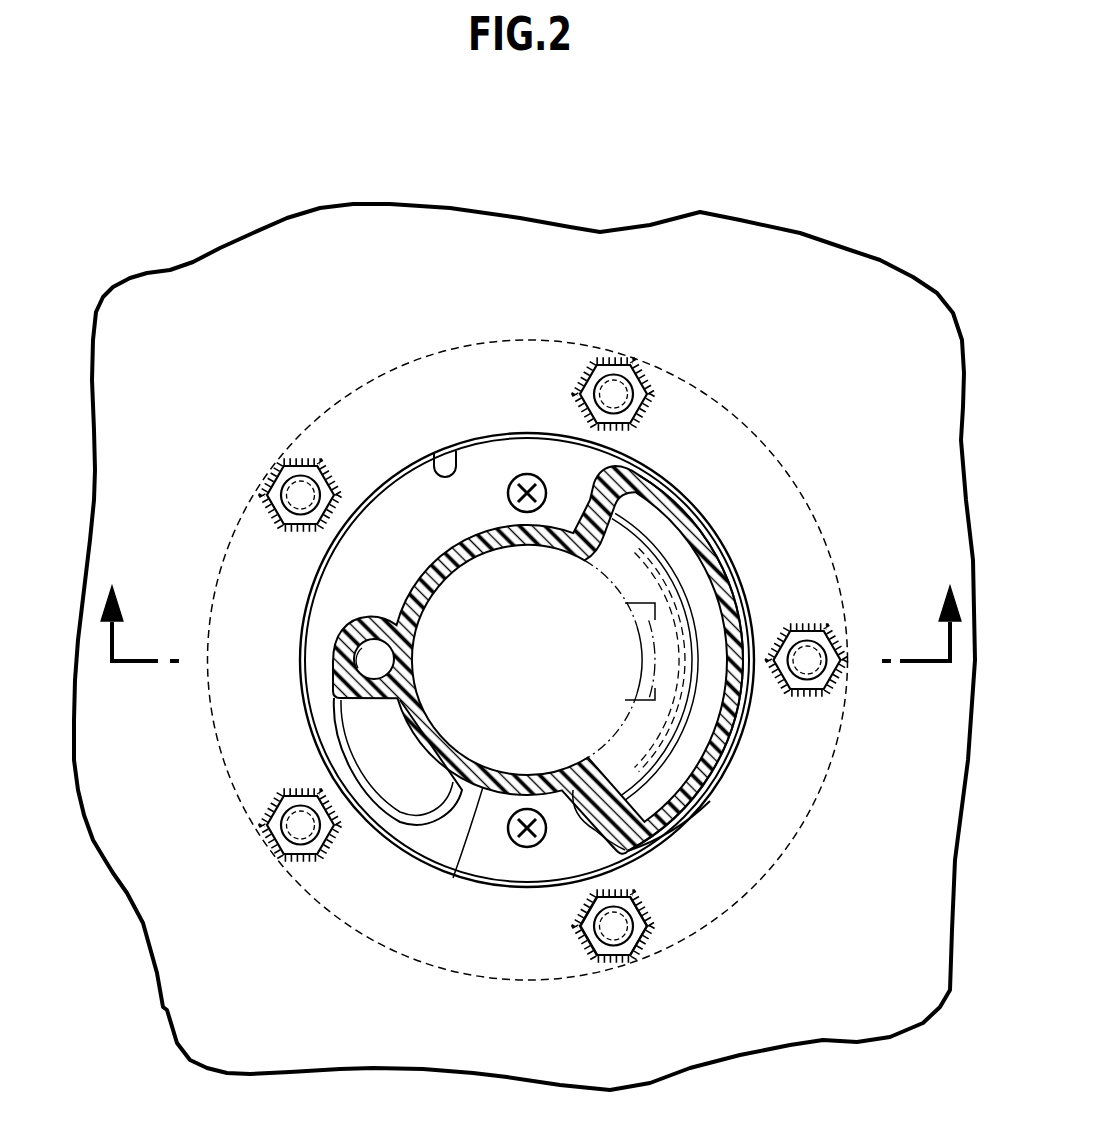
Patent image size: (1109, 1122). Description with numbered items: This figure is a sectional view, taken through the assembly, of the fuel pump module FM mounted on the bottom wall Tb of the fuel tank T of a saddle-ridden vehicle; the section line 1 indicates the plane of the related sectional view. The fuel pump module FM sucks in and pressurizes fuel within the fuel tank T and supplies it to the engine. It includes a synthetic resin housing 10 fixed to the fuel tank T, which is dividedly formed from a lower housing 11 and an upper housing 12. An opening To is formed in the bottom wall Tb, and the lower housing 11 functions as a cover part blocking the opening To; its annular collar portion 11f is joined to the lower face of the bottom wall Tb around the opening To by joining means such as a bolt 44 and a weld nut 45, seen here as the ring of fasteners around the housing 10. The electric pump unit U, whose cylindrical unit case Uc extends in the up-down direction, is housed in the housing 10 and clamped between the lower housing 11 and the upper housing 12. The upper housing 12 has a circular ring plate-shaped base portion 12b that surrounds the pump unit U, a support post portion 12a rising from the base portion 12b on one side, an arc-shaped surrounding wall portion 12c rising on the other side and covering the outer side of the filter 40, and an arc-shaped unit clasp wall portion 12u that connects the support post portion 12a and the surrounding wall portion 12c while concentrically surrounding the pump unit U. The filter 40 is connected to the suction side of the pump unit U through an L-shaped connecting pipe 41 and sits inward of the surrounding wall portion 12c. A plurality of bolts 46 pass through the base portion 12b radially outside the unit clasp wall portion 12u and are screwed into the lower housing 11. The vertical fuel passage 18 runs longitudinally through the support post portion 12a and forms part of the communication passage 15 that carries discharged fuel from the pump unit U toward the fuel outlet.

The fuel tank T is at (320, 240).
The bottom wall Tb is at (859, 371).
The section line 1- 1 is at (531, 648).
The housing 10 is at (223, 400).
The lower housing 11 is at (534, 660).
The annular collar portion 11f is at (810, 842).
The upper housing 12 is at (501, 662).
The support post portion 12a is at (345, 705).
The base portion 12b is at (388, 818).
The surrounding wall portion 12c is at (745, 722).
The unit clasp wall portion 12u is at (465, 538).
The communication passage 15 is at (355, 651).
The vertical fuel passage 18 is at (299, 648).
The filter 40 is at (641, 510).
The connecting pipe 41 is at (698, 776).
The bolt 44 is at (612, 960).
The weld nut 45 is at (657, 948).
The bolts 46 is at (527, 474).
The opening To is at (431, 458).
The electric pump unit U is at (693, 649).
The unit case Uc is at (660, 575).
The fuel pump module FM is at (376, 918).